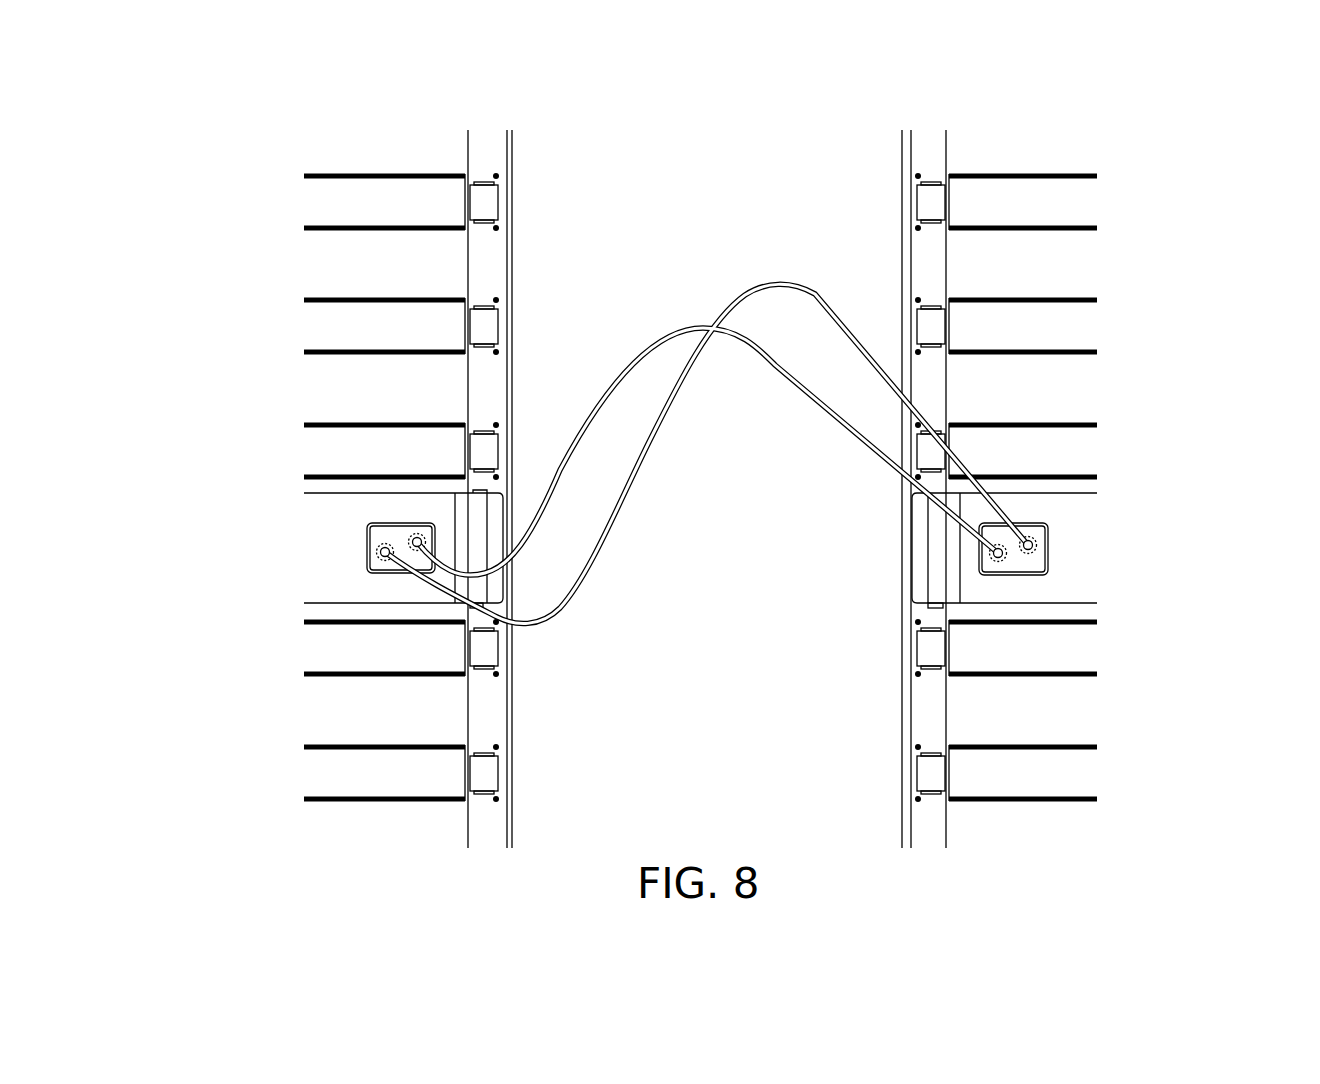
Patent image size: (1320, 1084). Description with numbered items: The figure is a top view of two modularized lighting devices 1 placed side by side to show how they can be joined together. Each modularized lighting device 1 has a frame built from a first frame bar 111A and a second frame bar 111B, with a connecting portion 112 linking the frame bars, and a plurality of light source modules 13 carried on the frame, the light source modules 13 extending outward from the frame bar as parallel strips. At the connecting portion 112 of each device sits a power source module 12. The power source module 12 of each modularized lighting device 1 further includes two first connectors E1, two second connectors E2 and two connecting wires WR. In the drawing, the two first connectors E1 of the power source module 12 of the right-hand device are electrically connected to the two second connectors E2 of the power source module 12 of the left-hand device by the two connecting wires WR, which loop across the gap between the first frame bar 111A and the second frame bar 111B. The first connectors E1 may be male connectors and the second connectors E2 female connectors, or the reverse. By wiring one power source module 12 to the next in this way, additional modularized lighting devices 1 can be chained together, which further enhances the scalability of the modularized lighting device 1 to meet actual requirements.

The modularized lighting device 1 is at (247, 445).
The power source module 12 is at (312, 575).
The light source module 13 is at (358, 196).
The first frame bar 111A is at (918, 260).
The second frame bar 111B is at (490, 262).
The connecting portion 112 is at (498, 593).
The first connector E1 is at (1003, 547).
The second connector E2 is at (380, 547).
The connecting wire WR is at (790, 387).